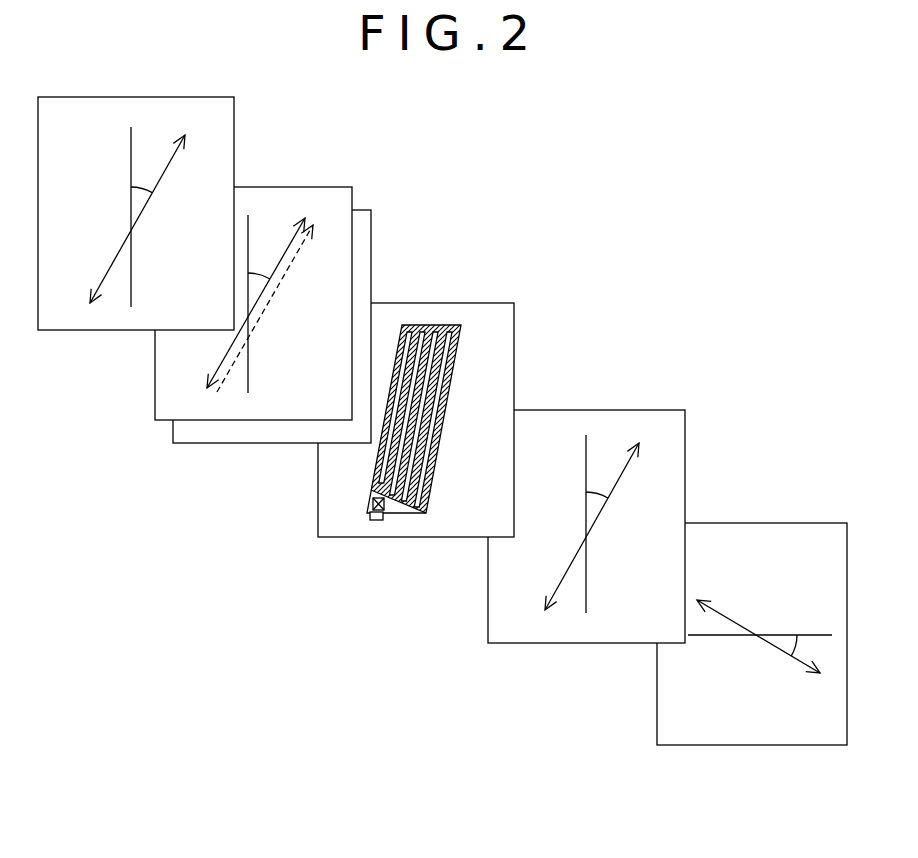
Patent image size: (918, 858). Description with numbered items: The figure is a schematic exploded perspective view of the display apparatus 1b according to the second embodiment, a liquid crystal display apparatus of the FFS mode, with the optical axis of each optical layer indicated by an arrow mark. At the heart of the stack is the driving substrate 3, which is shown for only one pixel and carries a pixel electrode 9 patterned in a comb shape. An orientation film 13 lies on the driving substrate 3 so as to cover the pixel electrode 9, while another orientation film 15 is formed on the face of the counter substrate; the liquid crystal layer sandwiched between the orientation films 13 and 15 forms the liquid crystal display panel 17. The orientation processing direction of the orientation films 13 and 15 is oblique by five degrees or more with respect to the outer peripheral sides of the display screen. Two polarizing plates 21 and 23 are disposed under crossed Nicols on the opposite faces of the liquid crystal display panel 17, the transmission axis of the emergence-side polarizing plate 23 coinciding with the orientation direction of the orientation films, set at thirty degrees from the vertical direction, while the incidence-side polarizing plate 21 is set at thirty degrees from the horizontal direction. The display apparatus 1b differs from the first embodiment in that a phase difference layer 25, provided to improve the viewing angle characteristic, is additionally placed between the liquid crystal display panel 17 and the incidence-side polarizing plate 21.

The display apparatus 1b is at (232, 680).
The driving substrate 3 is at (405, 394).
The pixel electrode 9 is at (457, 357).
The orientation film 13 is at (371, 226).
The orientation film 15 is at (352, 190).
The liquid crystal display panel 17 is at (424, 176).
The polarizing plate 21 is at (670, 747).
The polarizing plate 23 is at (234, 117).
The phase difference layer 25 is at (505, 645).